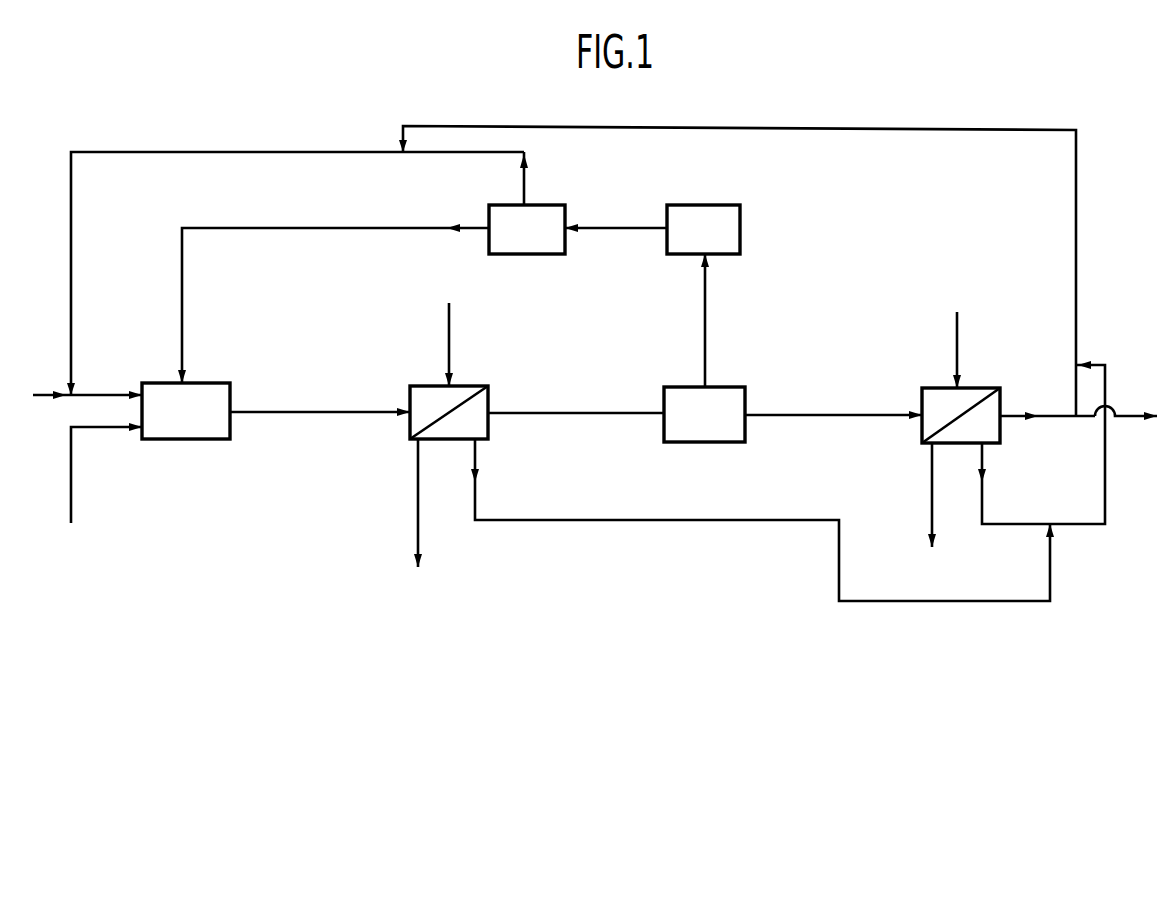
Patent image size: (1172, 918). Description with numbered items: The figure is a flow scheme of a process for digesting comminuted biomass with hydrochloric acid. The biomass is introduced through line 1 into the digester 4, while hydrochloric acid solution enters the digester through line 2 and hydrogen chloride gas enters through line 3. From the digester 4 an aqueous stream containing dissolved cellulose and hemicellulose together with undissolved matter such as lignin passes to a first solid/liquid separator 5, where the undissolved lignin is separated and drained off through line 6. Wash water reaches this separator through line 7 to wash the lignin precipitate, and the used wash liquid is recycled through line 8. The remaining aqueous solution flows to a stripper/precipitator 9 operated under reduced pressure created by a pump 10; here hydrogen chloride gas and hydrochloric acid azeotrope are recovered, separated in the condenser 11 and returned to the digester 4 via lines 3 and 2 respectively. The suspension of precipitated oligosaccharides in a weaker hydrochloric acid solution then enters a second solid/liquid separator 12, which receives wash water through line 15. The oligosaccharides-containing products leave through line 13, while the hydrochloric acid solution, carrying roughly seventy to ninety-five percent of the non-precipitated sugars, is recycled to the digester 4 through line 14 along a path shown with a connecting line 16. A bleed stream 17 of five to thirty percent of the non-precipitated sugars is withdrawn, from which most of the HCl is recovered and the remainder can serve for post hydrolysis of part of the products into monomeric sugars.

The line 1 is at (106, 473).
The line 2 is at (87, 380).
The line 3 is at (333, 303).
The digester 4 is at (186, 411).
The solid/liquid separator 5 is at (408, 384).
The line 6 is at (418, 521).
The line 7 is at (452, 329).
The line 8 is at (762, 520).
The stripper/precipitator 9 is at (704, 414).
The pump 10 is at (703, 296).
The condenser 11 is at (578, 203).
The solid/liquid separator 12 is at (922, 391).
The line 13 is at (933, 513).
The line 14 is at (1047, 401).
The line 15 is at (957, 331).
The recycle line 16 is at (1041, 442).
The bleed stream 17 is at (1126, 401).